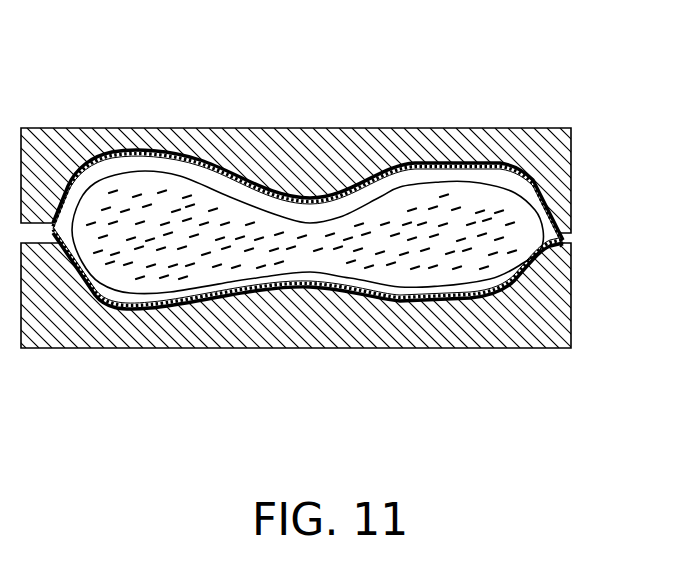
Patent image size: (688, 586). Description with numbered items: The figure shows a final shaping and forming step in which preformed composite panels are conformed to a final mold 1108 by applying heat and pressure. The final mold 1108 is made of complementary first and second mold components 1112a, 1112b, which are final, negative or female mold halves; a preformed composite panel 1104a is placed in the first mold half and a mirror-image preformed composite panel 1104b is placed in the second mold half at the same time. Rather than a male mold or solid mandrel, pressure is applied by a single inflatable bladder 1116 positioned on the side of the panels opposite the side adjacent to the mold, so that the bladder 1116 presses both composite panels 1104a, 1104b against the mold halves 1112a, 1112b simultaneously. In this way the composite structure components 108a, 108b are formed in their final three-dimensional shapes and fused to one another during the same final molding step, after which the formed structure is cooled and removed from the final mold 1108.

The final mold 1108 is at (344, 221).
The first mold component 1112a is at (43, 128).
The second mold component 1112b is at (100, 348).
The preformed composite panel 1104a is at (502, 172).
The preformed composite panel 1104b is at (507, 300).
The composite structure component 108a is at (413, 172).
The composite structure component 108b is at (435, 300).
The inflatable bladder 1116 is at (568, 215).